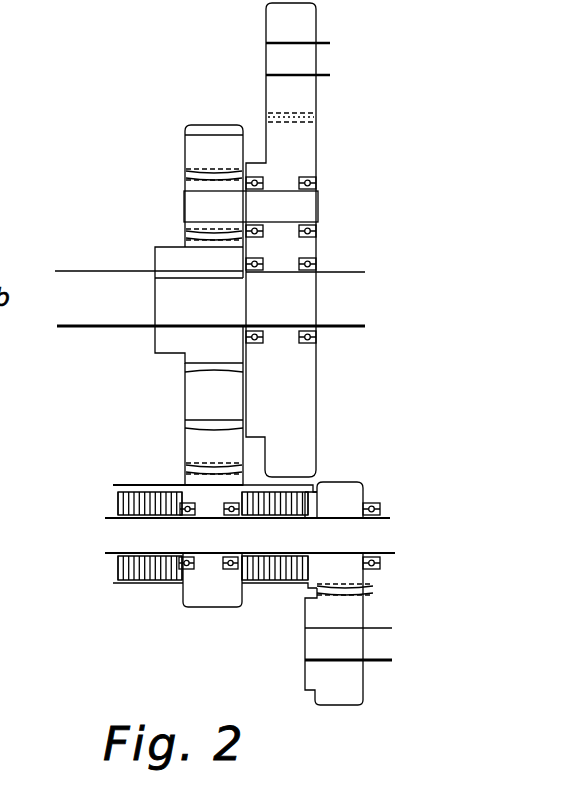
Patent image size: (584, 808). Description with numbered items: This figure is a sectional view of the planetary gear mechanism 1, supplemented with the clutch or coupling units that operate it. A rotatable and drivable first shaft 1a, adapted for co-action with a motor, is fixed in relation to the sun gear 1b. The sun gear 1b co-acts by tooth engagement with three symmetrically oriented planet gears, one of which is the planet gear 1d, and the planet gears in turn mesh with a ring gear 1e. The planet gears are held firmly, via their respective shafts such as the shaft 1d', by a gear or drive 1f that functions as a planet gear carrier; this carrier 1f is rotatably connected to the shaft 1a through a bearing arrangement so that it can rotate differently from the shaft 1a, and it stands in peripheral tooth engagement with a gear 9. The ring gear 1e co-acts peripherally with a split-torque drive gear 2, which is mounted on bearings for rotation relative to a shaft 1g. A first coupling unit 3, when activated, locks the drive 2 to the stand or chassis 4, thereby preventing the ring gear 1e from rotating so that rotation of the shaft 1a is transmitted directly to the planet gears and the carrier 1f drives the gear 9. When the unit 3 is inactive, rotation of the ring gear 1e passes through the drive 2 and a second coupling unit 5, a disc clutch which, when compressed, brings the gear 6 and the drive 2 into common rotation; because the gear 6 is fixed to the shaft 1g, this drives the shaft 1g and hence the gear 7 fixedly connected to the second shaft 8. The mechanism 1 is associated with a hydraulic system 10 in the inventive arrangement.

The planetary gear mechanism 1 is at (350, 74).
The first shaft 1a is at (107, 316).
The sun gear 1b is at (172, 344).
The planet gear 1d is at (176, 186).
The planet gear shaft 1d' is at (292, 199).
The ring gear 1e is at (172, 449).
The planet carrier gear 1f is at (303, 153).
The shaft 1g is at (383, 540).
The split-torque drive gear 2 is at (175, 593).
The first coupling unit 3 is at (98, 518).
The stand or chassis 4 is at (125, 588).
The second coupling unit 5 is at (270, 598).
The gear 6 is at (343, 487).
The gear 7 is at (355, 614).
The second shaft 8 is at (437, 671).
The gear 9 is at (303, 33).
The hydraulic system 10 is at (437, 282).